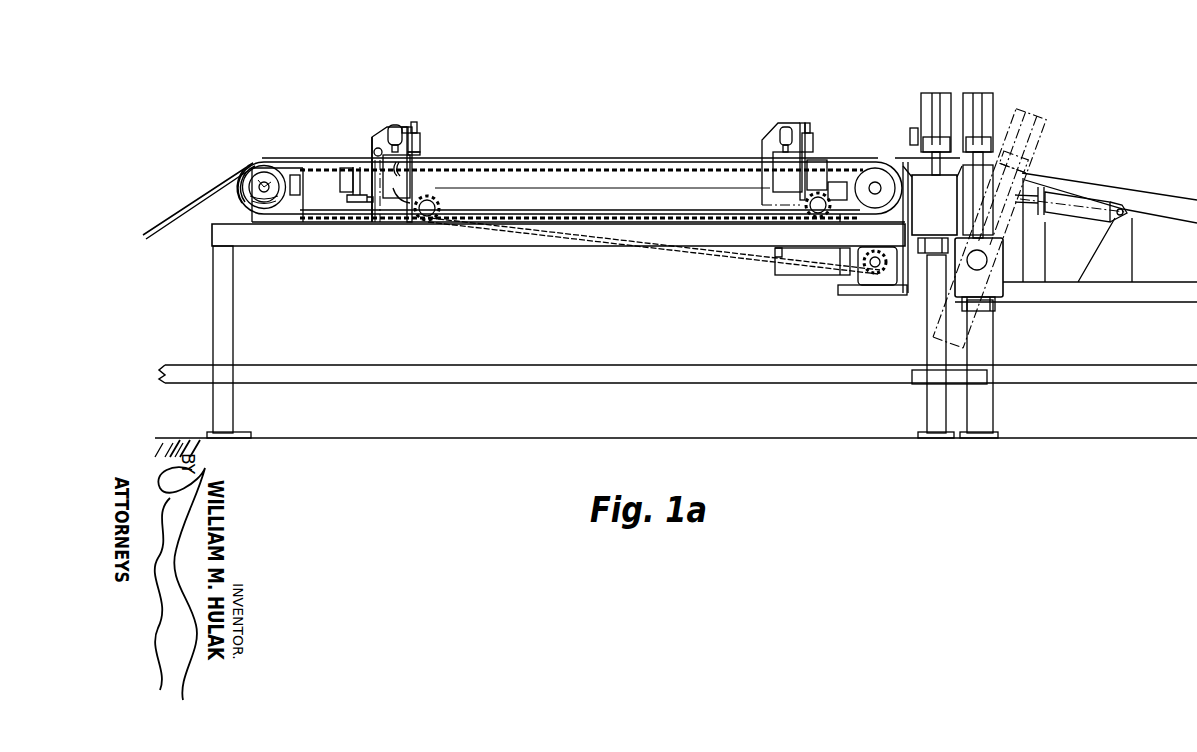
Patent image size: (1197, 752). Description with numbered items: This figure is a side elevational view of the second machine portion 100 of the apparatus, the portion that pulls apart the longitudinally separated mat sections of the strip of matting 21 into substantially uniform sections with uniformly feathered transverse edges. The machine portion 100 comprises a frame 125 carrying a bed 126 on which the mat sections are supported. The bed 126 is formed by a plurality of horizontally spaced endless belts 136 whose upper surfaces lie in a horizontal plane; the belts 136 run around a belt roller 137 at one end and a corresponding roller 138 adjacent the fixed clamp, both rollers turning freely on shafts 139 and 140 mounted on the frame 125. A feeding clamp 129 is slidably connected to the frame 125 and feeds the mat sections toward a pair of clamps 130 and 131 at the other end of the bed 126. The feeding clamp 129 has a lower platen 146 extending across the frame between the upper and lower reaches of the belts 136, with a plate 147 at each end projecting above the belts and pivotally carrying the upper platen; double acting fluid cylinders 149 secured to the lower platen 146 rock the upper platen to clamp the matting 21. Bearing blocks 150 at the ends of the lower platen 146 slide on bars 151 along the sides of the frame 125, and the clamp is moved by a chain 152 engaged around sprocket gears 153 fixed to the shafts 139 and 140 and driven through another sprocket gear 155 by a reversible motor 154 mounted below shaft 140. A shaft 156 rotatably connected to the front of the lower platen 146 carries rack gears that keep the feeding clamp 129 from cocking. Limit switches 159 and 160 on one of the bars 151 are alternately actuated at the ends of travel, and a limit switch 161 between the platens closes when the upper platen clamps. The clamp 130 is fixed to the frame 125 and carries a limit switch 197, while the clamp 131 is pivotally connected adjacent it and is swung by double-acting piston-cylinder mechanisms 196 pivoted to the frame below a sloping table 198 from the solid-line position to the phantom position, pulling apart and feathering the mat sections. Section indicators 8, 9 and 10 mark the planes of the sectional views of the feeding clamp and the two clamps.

The strip of matting 21 is at (165, 220).
The second machine portion 100 is at (633, 80).
The frame 125 is at (474, 392).
The bed 126 is at (539, 157).
The feeding clamp 129 is at (377, 130).
The fixed clamp 130 is at (940, 93).
The pivotal clamp 131 is at (977, 95).
The endless belts 136 is at (605, 168).
The belt roller 137 is at (268, 170).
The belt roller 138 is at (858, 172).
The shaft 139 is at (260, 181).
The shaft 140 is at (876, 182).
The lower platen 146 is at (375, 200).
The plate 147 is at (371, 152).
The double acting fluid cylinder 149 is at (405, 178).
The bearing block 150 is at (307, 222).
The bar 151 is at (503, 183).
The chain 152 is at (665, 168).
The sprocket gear 153 is at (290, 170).
The reversible motor 154 is at (797, 253).
The sprocket gear 155 is at (862, 262).
The shaft 156 is at (432, 222).
The limit switch 159 is at (840, 222).
The limit switch 160 is at (352, 202).
The limit switch 161 is at (420, 134).
The double-acting piston-cylinder mechanism 196 is at (1084, 222).
The limit switch 197 is at (912, 127).
The sloping table 198 is at (1146, 190).
The section line 8- 8 is at (403, 300).
The section line 9- 9 is at (907, 327).
The section line 10- 10 is at (958, 357).